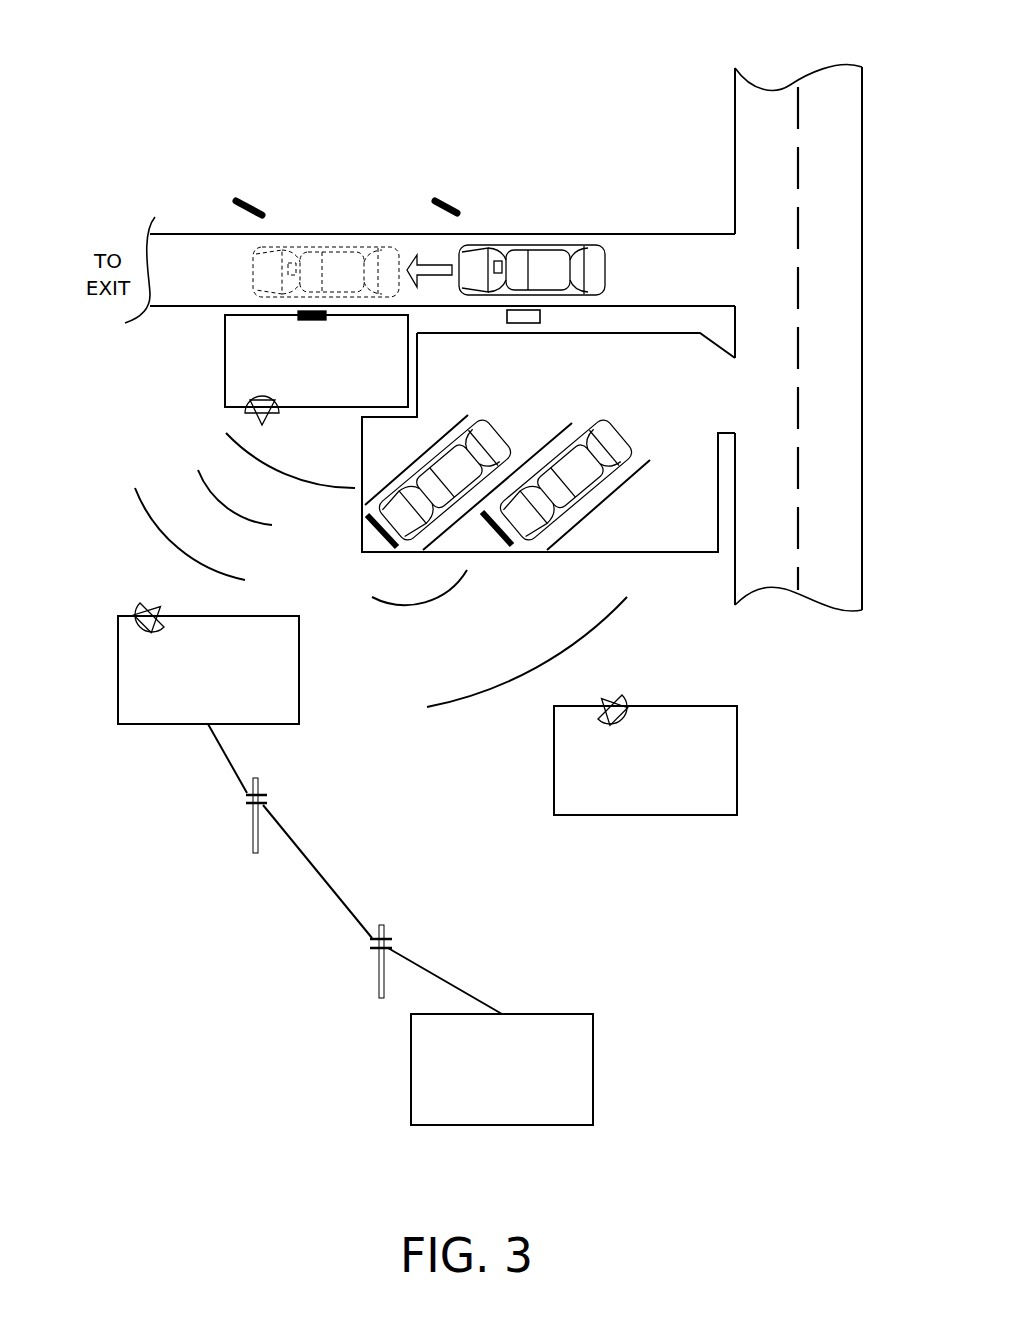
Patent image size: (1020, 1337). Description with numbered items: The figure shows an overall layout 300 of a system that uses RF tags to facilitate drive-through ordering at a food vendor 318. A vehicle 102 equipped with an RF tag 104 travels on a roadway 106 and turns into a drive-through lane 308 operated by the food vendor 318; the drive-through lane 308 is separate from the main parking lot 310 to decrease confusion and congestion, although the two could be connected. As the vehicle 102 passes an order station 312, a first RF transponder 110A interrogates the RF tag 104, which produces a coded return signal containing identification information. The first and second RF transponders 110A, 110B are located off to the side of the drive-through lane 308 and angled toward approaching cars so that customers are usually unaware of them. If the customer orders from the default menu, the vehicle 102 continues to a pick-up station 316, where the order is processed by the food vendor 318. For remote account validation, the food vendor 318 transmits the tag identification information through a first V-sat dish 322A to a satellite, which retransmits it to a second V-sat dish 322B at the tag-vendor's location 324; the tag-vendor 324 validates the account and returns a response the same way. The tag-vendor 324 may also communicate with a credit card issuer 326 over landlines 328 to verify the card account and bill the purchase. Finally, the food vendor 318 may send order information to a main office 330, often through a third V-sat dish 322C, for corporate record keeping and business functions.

The overall layout 300 is at (403, 37).
The vehicle 102 is at (598, 245).
The RF tag 104 is at (503, 262).
The roadway 106 is at (807, 73).
The first RF transponder 110A is at (450, 205).
The second RF transponder 110B is at (252, 201).
The drive-through lane 308 is at (705, 287).
The main parking lot 310 is at (680, 419).
The order station 312 is at (523, 323).
The pick-up station 316 is at (300, 319).
The food vendor 318 is at (316, 361).
The first V-sat dish 322A is at (243, 417).
The second V-sat dish 322B is at (143, 598).
The third V-sat dish 322C is at (620, 690).
The tag-vendor's location 324 is at (208, 670).
The credit card issuer 326 is at (502, 1069).
The landlines 328 is at (257, 778).
The main office 330 is at (645, 760).